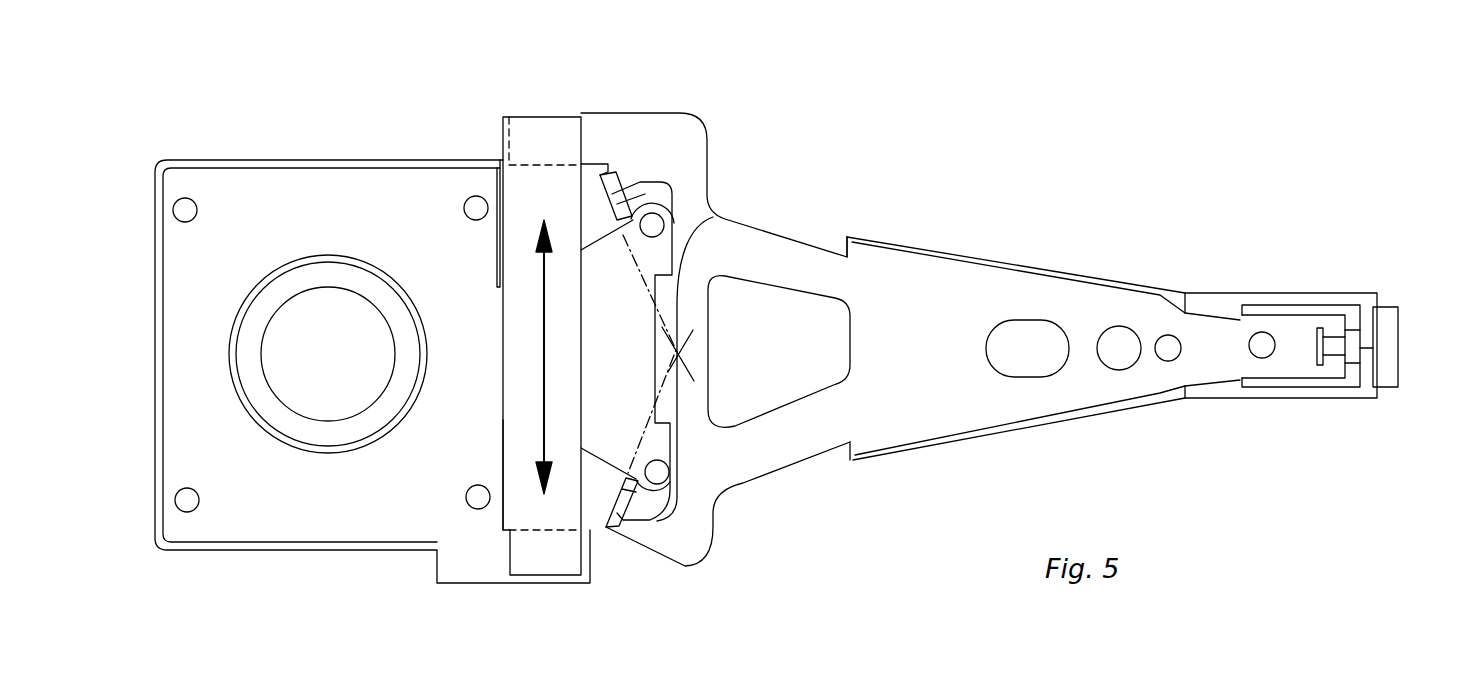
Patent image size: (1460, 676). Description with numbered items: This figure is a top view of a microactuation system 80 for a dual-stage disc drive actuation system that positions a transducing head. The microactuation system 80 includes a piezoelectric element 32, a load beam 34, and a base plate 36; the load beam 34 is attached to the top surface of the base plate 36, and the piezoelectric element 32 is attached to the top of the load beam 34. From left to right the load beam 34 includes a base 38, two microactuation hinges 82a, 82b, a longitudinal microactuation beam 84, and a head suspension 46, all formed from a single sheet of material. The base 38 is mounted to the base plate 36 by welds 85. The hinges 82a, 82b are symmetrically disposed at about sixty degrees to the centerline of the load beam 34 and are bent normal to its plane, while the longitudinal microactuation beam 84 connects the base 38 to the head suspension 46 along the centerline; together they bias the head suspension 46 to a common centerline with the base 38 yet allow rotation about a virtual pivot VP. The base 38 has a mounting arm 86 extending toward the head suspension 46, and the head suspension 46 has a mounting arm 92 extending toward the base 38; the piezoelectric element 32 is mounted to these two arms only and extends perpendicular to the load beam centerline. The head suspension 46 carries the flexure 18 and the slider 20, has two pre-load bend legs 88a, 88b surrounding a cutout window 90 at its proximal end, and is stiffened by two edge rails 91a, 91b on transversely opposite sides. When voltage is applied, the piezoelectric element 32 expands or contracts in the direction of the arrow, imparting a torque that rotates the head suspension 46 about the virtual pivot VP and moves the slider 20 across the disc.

The microactuation system 80 is at (922, 82).
The base plate 36 is at (155, 303).
The base 38 is at (235, 188).
The welds 85 is at (178, 206).
The mounting arm 86 is at (517, 583).
The piezoelectric element 32 is at (534, 133).
The mounting arm 92 is at (508, 117).
The load beam 34 is at (600, 586).
The microactuation hinge 82a is at (630, 183).
The microactuation hinge 82b is at (620, 503).
The longitudinal microactuation beam 84 is at (713, 217).
The virtual pivot VP is at (692, 352).
The head suspension 46 is at (932, 285).
The pre-load bend leg 88a is at (783, 257).
The pre-load bend leg 88b is at (813, 443).
The cutout window 90 is at (747, 403).
The edge rail 91a is at (1073, 275).
The edge rail 91b is at (1017, 433).
The flexure 18 is at (1303, 393).
The slider 20 is at (1387, 368).